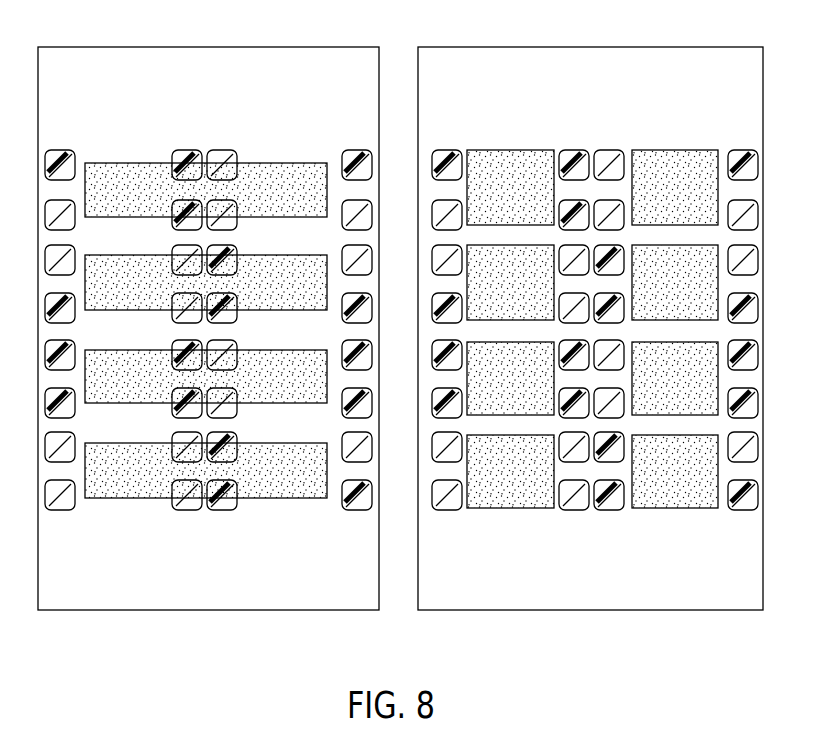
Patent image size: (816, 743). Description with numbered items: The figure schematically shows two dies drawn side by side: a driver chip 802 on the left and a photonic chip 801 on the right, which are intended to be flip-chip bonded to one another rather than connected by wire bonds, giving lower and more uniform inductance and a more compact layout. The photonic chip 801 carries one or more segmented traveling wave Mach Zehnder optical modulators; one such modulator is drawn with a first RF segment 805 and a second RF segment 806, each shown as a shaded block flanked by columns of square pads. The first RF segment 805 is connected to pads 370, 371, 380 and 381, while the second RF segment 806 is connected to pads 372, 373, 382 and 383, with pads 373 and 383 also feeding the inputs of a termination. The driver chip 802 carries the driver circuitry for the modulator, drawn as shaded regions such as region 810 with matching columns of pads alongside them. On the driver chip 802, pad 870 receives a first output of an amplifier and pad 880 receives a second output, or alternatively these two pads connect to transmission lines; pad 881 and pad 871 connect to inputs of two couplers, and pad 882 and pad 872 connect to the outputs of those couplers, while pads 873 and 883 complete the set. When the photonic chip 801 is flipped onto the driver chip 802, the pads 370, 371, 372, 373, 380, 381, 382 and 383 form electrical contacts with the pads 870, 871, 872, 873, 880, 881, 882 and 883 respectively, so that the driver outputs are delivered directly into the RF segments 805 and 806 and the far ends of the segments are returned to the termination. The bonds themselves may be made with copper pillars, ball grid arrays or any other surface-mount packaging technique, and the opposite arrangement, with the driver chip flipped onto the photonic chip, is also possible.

The pad 370 is at (447, 150).
The pad 371 is at (570, 152).
The pad 372 is at (605, 150).
The pad 373 is at (735, 157).
The pad 380 is at (434, 210).
The pad 381 is at (562, 205).
The pad 382 is at (603, 203).
The pad 383 is at (728, 212).
The photonic chip 801 is at (585, 610).
The driver chip 802 is at (143, 610).
The first RF segment 805 is at (510, 150).
The second RF segment 806 is at (668, 150).
The stippled region 810 is at (277, 163).
The pad 870 is at (72, 155).
The pad 871 is at (178, 155).
The pad 872 is at (222, 150).
The pad 873 is at (352, 152).
The pad 880 is at (48, 213).
The pad 881 is at (175, 220).
The pad 882 is at (238, 223).
The pad 883 is at (342, 215).